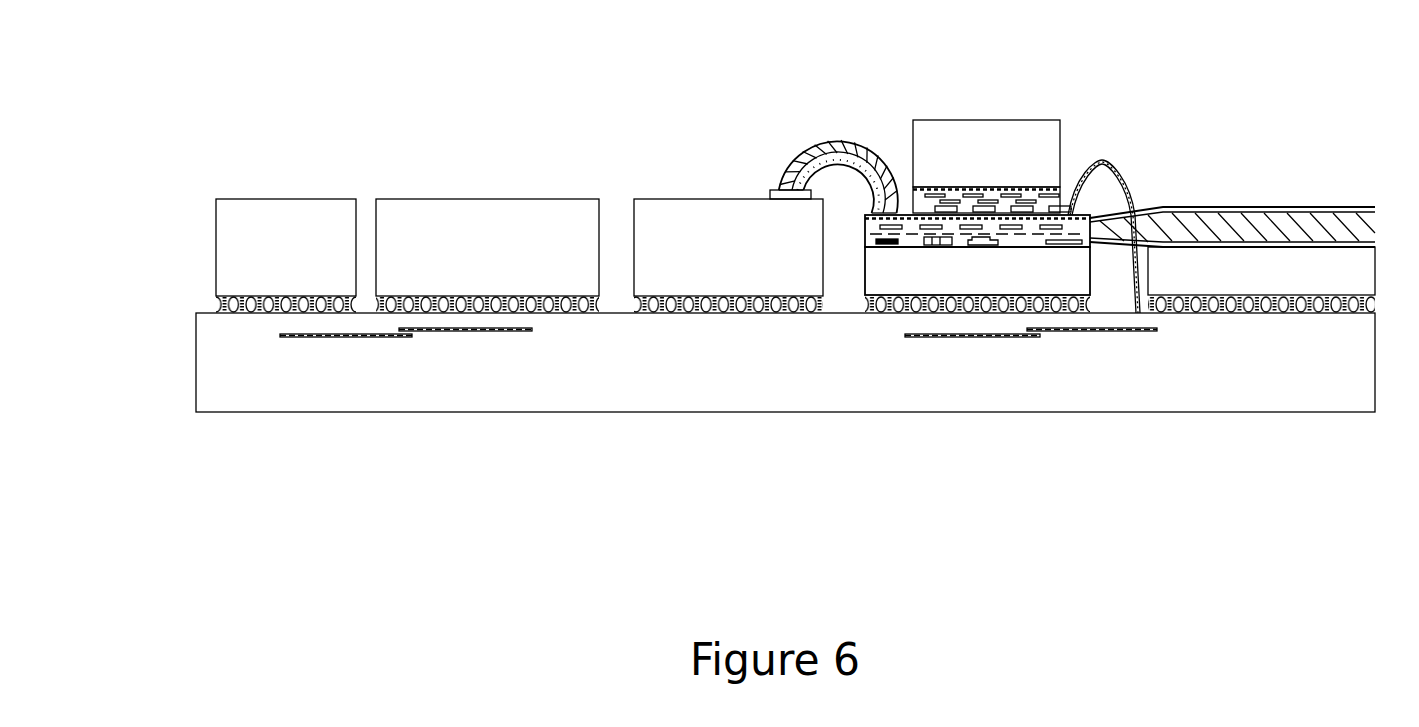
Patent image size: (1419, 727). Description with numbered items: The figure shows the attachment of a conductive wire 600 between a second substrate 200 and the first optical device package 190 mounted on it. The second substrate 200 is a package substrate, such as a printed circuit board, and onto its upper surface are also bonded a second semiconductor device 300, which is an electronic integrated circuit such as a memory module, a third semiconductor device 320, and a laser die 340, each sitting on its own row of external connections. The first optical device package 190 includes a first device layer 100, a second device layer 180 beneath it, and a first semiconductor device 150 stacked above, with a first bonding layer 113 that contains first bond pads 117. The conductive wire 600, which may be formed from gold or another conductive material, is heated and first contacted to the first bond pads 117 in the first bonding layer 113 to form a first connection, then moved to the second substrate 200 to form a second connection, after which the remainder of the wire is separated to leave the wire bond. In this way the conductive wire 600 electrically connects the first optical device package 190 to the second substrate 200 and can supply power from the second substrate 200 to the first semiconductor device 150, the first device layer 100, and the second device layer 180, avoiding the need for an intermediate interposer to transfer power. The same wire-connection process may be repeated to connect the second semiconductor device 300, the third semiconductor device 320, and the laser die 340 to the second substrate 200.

The first device layer 100 is at (920, 304).
The first bonding layer 113 is at (862, 220).
The first bond pads 117 is at (1078, 213).
The first semiconductor device 150 is at (1012, 170).
The second device layer 180 is at (1002, 287).
The first optical device package 190 is at (925, 119).
The second substrate 200 is at (178, 365).
The second semiconductor device 300 is at (282, 232).
The third semiconductor device 320 is at (485, 232).
The laser die 340 is at (724, 232).
The conductive wire 600 is at (1103, 160).